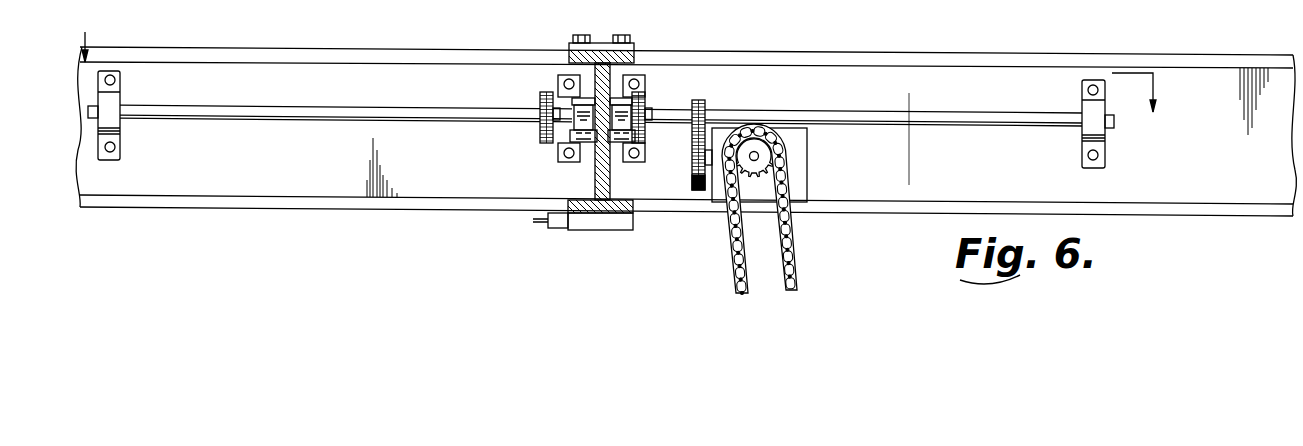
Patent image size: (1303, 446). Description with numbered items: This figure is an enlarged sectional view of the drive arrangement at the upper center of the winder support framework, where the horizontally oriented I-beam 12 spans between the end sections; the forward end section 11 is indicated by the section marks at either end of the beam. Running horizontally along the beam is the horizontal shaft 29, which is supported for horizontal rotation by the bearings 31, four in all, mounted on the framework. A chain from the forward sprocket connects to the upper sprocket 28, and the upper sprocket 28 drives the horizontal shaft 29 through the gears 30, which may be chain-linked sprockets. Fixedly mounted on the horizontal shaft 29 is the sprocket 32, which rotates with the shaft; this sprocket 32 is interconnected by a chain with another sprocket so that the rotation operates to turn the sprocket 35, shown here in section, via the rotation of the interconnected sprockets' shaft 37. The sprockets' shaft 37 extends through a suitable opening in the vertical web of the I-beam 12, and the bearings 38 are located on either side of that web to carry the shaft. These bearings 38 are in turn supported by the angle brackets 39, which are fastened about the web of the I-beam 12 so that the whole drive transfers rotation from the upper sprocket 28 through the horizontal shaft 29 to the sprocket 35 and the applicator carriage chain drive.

The forward end section 11 is at (644, 68).
The I-beam 12 is at (601, 50).
The upper sprocket 28 is at (765, 163).
The horizontal shaft 29 is at (329, 110).
The gears 30 is at (706, 142).
The bearings 31 is at (117, 100).
The sprocket 32 is at (540, 100).
The sprocket 35 is at (648, 102).
The sprockets' shaft 37 is at (540, 113).
The bearings 38 is at (618, 100).
The angle brackets 39 is at (592, 160).